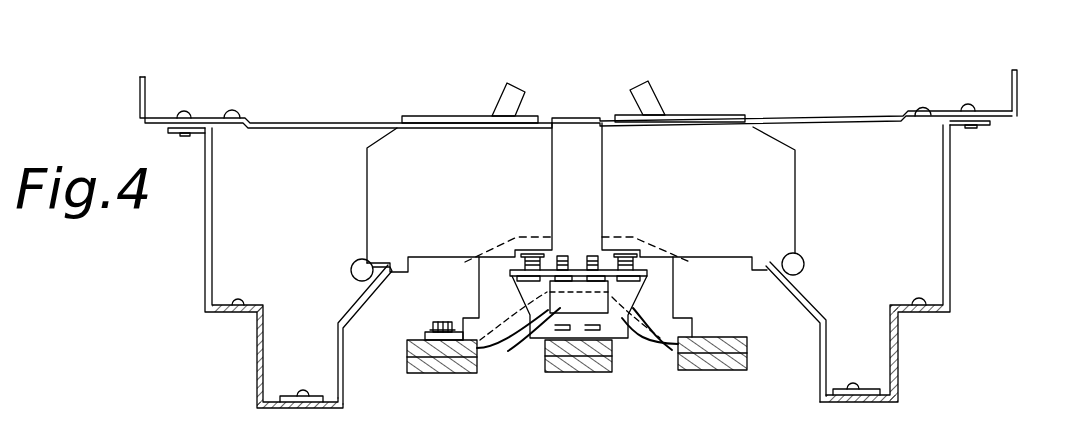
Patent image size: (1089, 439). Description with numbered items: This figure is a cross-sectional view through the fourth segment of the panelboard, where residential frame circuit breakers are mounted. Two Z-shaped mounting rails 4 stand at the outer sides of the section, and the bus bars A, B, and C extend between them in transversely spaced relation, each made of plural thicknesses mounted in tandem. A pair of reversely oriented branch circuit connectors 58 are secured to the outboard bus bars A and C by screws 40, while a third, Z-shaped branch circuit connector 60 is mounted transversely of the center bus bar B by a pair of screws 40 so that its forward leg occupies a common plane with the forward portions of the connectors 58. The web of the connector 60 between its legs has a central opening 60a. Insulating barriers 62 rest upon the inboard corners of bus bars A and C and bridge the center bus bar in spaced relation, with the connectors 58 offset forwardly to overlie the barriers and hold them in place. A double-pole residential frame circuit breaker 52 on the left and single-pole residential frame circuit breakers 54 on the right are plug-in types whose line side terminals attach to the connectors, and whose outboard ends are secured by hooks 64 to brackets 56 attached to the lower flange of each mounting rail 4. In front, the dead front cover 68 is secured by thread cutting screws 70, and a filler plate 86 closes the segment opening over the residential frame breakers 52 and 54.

The mounting rail 4 is at (257, 357).
The screw 40 is at (444, 322).
The double-pole residential frame circuit breaker 52 is at (472, 221).
The single-pole residential frame circuit breaker 54 is at (727, 221).
The bracket 56 is at (354, 313).
The branch circuit connector 58 is at (423, 337).
The third branch circuit connector 60 is at (510, 276).
The central opening 60a is at (577, 333).
The insulating barrier 62 is at (672, 292).
The hook 64 is at (353, 266).
The dead front cover 68 is at (1017, 91).
The thread cutting screw 70 is at (184, 115).
The filler plate 86 is at (323, 118).
The bus bar A is at (447, 373).
The bus bar B is at (583, 372).
The bus bar C is at (722, 373).